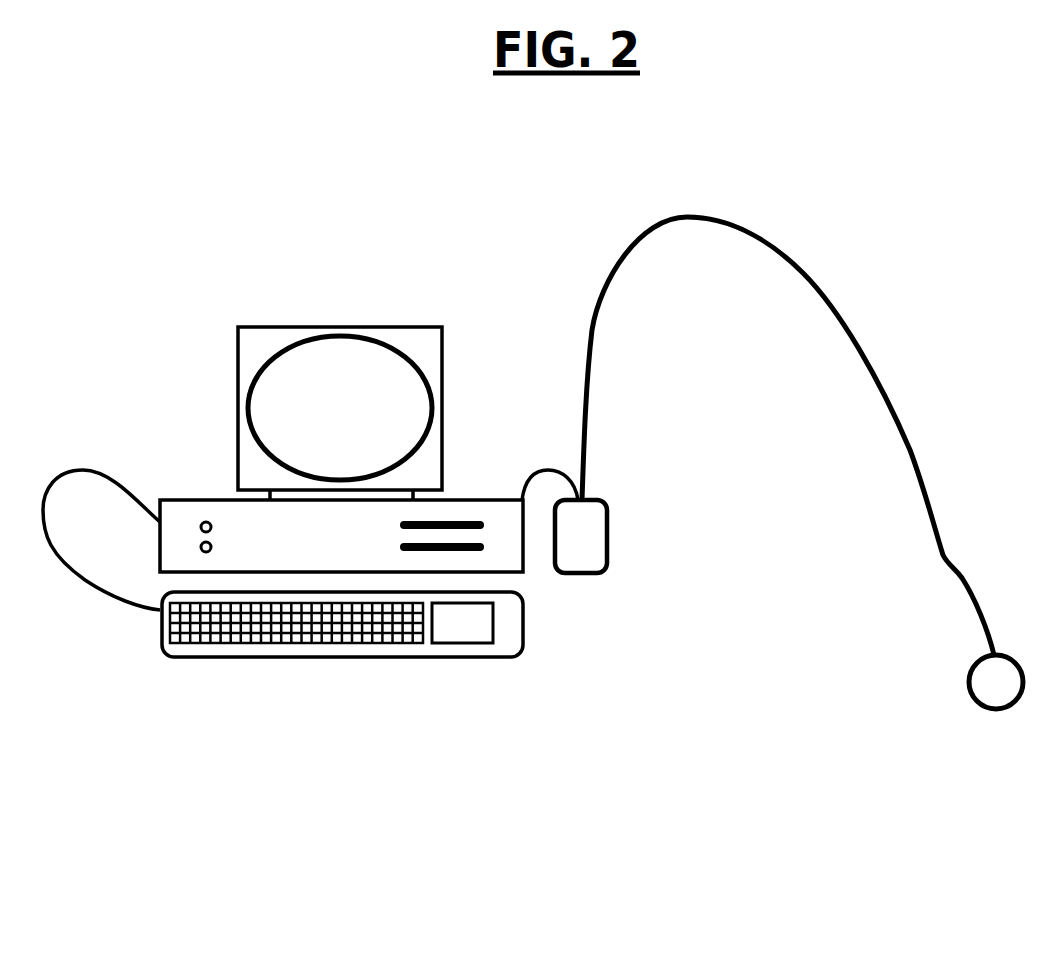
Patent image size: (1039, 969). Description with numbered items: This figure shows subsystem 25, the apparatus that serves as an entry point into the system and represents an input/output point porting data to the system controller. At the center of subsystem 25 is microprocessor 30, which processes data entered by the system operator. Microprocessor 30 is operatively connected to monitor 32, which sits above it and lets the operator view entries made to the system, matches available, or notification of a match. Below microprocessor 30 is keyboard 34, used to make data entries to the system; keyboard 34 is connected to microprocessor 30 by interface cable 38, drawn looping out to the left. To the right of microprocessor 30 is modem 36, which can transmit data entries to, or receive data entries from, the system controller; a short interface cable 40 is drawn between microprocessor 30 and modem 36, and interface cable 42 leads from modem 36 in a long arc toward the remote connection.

The subsystem 25 is at (533, 561).
The microprocessor 30 is at (347, 551).
The monitor 32 is at (273, 357).
The keyboard 34 is at (476, 634).
The modem 36 is at (592, 552).
The interface cable 38 is at (83, 447).
The interface cable 40 is at (549, 448).
The interface cable 42 is at (679, 282).